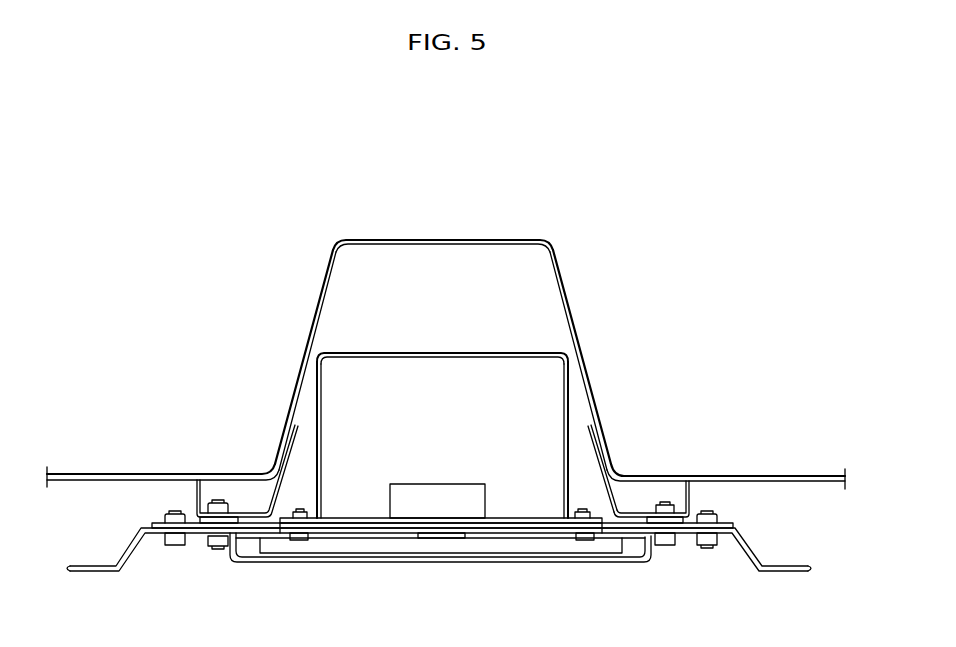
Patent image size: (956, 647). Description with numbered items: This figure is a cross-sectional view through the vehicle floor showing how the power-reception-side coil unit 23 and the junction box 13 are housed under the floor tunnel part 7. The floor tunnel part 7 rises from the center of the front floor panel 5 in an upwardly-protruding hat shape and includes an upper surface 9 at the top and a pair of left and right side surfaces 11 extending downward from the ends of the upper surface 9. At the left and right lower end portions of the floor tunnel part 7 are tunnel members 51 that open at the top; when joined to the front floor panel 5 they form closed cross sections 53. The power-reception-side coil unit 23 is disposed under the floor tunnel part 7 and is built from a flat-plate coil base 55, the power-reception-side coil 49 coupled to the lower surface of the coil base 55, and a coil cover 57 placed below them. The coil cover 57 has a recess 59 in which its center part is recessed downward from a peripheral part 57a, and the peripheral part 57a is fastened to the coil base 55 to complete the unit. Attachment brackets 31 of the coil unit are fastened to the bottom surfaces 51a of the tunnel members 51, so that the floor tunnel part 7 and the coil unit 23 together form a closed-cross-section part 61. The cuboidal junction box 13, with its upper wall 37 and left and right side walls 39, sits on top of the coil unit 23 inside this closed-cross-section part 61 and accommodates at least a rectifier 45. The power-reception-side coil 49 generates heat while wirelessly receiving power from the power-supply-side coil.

The front floor panel 5 is at (91, 468).
The floor tunnel part 7 is at (432, 320).
The upper surface 9 is at (446, 240).
The side surfaces 11 is at (303, 360).
The junction box 13 is at (442, 277).
The upper wall 37 is at (378, 352).
The power-reception-side coil unit 23 is at (438, 581).
The attachment brackets 31 is at (737, 527).
The side walls 39 is at (455, 357).
The rectifier 45 is at (452, 492).
The power-reception-side coil 49 is at (561, 549).
The tunnel members 51 is at (443, 468).
The bottom surfaces 51a is at (630, 512).
The closed cross sections 53 is at (242, 485).
The coil base 55 is at (726, 546).
The coil cover 57 is at (347, 563).
The peripheral part 57a is at (218, 548).
The recess 59 is at (632, 556).
The closed-cross-section part 61 is at (468, 282).